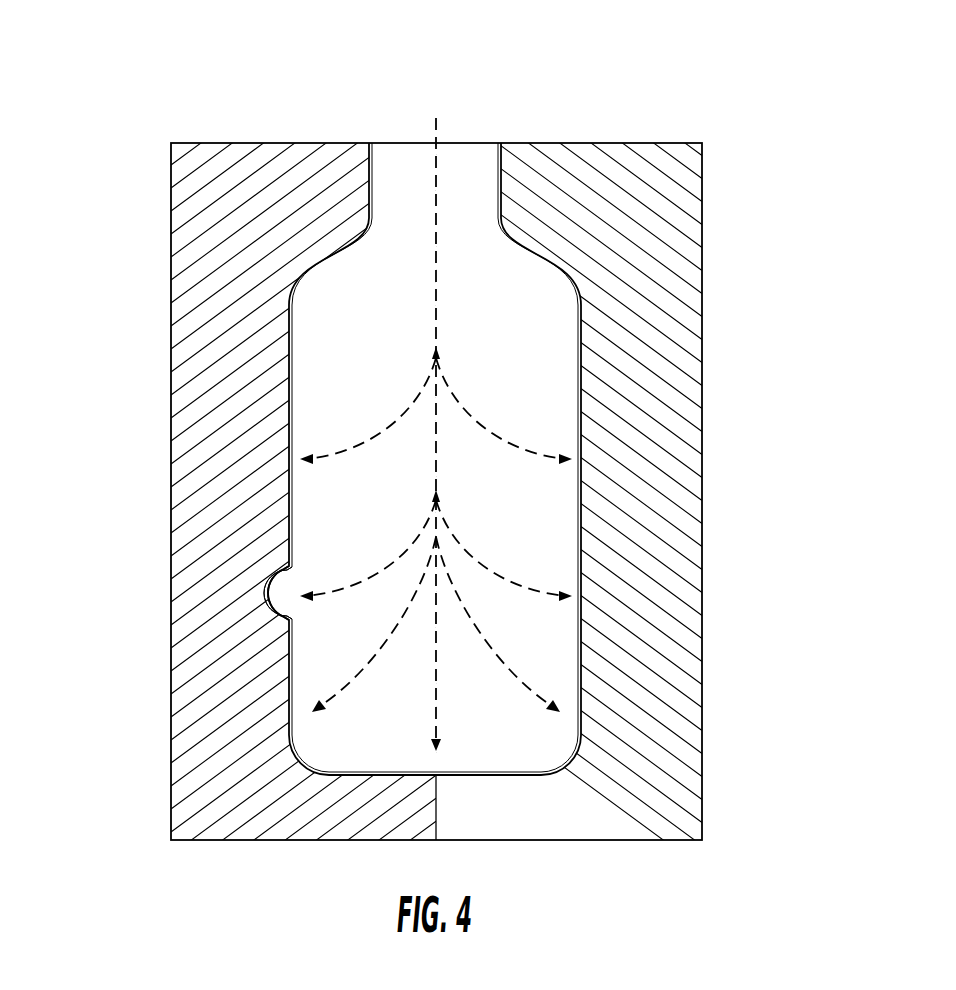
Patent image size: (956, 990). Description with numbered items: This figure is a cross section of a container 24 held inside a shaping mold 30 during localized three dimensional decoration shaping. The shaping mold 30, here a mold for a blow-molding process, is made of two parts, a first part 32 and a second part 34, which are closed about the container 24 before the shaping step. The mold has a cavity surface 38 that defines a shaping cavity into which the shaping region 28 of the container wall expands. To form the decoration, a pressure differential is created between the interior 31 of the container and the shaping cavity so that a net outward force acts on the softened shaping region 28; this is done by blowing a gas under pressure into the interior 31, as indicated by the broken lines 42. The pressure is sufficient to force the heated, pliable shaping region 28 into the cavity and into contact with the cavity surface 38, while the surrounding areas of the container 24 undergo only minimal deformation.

The shaping mold 30 is at (609, 134).
The first part 32 is at (171, 289).
The second part 34 is at (704, 307).
The container 24 is at (293, 351).
The shaping region 28 is at (281, 578).
The cavity surface 38 is at (256, 591).
The broken lines 42 is at (436, 328).
The interior of the container 31 is at (520, 524).